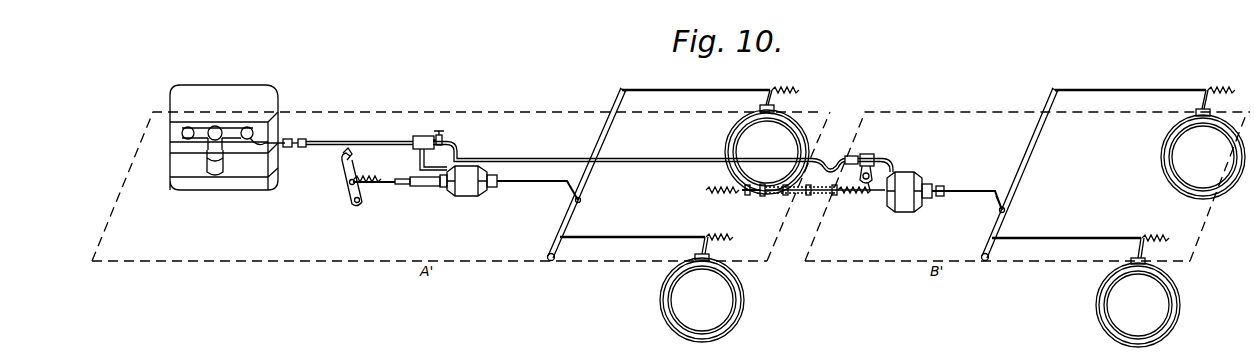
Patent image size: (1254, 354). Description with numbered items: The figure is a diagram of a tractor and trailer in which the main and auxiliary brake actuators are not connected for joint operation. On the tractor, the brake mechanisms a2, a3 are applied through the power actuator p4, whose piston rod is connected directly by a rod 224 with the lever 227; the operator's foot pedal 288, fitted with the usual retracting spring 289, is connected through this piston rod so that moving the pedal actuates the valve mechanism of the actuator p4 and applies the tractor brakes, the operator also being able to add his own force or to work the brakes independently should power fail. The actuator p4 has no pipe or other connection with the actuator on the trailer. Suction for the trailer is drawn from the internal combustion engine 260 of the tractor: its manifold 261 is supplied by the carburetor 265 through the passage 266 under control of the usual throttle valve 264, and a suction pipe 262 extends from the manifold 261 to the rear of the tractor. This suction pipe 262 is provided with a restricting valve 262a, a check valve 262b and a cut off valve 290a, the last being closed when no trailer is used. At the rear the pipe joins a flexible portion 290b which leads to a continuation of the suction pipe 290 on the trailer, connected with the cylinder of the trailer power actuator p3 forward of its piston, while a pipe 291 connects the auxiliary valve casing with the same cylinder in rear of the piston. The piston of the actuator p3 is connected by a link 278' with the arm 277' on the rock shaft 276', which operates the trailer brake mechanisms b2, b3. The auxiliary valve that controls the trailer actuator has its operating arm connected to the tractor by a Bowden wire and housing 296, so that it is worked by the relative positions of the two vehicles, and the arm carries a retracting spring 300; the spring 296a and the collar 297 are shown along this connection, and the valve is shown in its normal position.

The internal combustion engine 260 is at (246, 95).
The manifold 261 is at (182, 133).
The passage 266 is at (218, 147).
The throttle valve 264 is at (207, 152).
The carburetor 265 is at (214, 170).
The restricting valve 262a is at (288, 137).
The check valve 262b is at (306, 140).
The suction pipe 262 is at (378, 136).
The cut off valve 290a is at (442, 141).
The retracting spring 289 is at (372, 175).
The foot pedal 288 is at (356, 196).
The rod 224 is at (535, 184).
The lever 227 is at (580, 193).
The spring 296a is at (714, 190).
The collar 297 is at (746, 193).
The Bowden wire and housing 296 is at (796, 194).
The flexible portion 290b is at (827, 158).
The suction pipe continuation 290 is at (868, 155).
The pipe 291 is at (900, 176).
The retracting spring 300 is at (866, 192).
The link 278' is at (977, 192).
The arm 277' is at (978, 208).
The rock shaft 276' is at (1022, 174).
The brake mechanism a3 is at (763, 142).
The brake mechanism a2 is at (697, 289).
The trailer brake mechanism b3 is at (1196, 144).
The trailer brake mechanism b2 is at (1132, 292).
The actuator p4 is at (431, 190).
The power actuator p3 is at (923, 206).